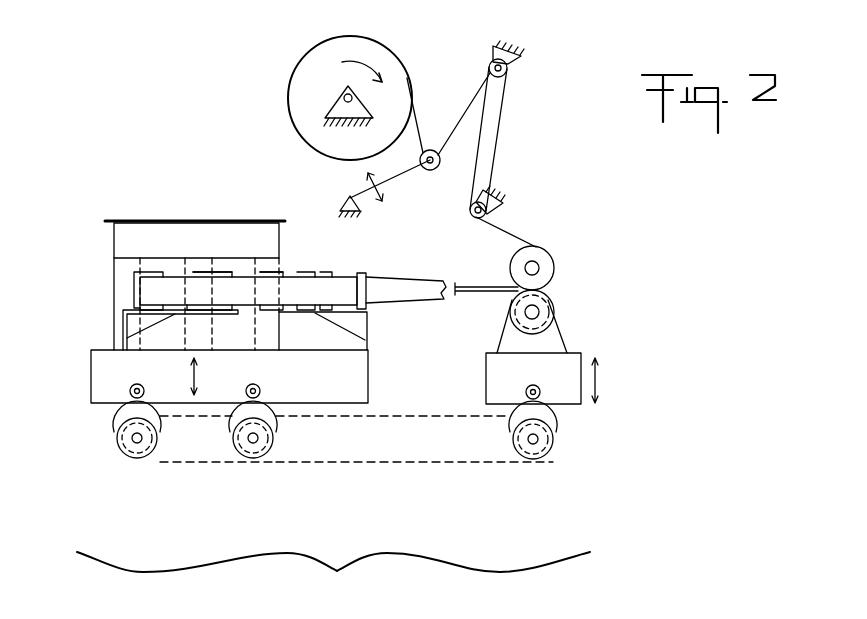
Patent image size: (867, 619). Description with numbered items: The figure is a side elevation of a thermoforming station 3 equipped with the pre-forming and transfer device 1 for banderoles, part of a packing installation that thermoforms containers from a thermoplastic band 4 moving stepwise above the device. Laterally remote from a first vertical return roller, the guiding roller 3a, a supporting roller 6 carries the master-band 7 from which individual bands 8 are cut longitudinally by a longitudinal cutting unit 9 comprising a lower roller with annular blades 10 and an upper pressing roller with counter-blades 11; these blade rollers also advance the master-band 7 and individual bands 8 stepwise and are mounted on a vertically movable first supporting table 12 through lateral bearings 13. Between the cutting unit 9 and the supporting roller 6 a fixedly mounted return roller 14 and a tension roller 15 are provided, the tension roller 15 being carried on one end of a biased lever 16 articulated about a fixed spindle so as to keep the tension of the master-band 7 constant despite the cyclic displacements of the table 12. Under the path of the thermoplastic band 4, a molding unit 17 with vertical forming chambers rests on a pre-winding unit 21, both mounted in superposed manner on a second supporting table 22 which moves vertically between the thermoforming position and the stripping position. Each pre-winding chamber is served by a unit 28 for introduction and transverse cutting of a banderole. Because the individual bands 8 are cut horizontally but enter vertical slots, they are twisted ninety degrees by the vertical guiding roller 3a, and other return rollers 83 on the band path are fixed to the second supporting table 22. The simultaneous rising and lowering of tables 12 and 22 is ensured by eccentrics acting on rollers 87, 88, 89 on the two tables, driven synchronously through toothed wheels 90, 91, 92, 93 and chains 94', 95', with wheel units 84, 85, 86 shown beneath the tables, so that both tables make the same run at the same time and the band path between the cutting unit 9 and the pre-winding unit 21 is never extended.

The pre-forming and transfer device 1 is at (333, 577).
The thermoforming station 3 is at (209, 267).
The vertical guiding roller 3a is at (362, 272).
The thermoplastic band 4 is at (137, 217).
The supporting roller 6 is at (312, 63).
The master-band 7 is at (488, 146).
The individual band 8 is at (480, 295).
The longitudinal cutting unit 9 is at (542, 274).
The lower roller equipped with annular blades 10 is at (552, 308).
The upper pressing roller equipped with counter-blades 11 is at (542, 257).
The first supporting table 12 is at (520, 378).
The lateral bearings 13 is at (558, 343).
The return roller 14 is at (508, 72).
The tension roller 15 is at (430, 150).
The biased lever 16 is at (397, 182).
The molding unit 17 is at (120, 242).
The pre-winding unit 21 is at (120, 318).
The second supporting table 22 is at (208, 376).
The unit for introduction and transverse cutting of a banderole 28 is at (217, 261).
The return rollers 83 is at (280, 272).
The wheel unit 84 is at (113, 445).
The wheel unit 85 is at (278, 446).
The wheel unit 86 is at (561, 448).
The roller 87 is at (148, 378).
The roller 88 is at (257, 385).
The roller 89 is at (535, 385).
The toothed wheel 90 is at (137, 460).
The toothed wheel 91 is at (270, 455).
The toothed wheel 92 is at (298, 430).
The toothed wheel 93 is at (550, 455).
The rail section 94' is at (218, 476).
The rail section 95' is at (414, 478).